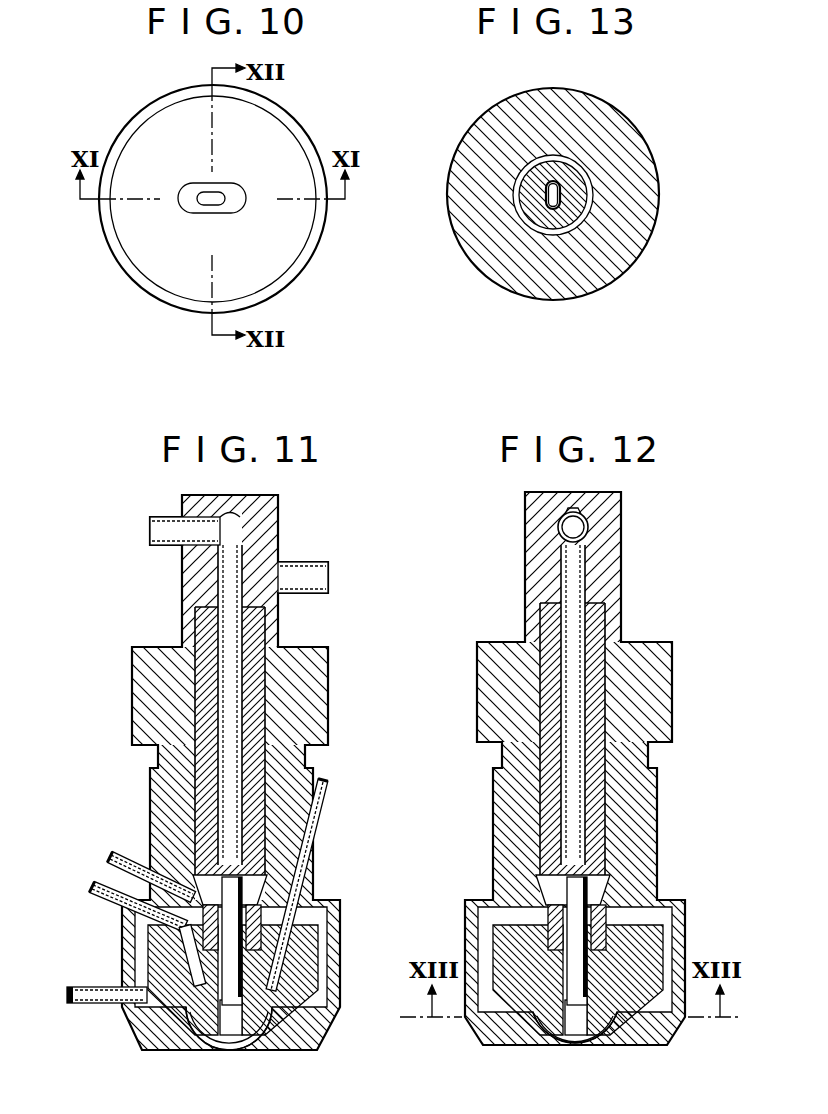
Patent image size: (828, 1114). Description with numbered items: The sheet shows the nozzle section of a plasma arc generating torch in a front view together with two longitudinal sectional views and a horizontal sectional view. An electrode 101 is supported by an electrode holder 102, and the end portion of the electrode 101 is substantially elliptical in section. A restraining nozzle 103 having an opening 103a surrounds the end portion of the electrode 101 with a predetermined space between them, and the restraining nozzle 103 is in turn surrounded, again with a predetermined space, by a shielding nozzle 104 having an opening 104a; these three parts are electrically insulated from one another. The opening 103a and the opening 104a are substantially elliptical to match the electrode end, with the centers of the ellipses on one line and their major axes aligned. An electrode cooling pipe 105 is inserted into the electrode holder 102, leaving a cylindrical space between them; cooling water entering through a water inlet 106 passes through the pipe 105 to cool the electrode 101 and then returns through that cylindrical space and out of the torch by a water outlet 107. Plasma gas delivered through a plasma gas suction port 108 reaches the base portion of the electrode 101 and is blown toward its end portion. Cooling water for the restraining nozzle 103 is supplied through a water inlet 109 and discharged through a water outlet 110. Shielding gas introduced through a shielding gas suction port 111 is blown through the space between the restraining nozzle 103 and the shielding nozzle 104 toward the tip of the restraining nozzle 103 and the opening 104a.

In FIG. 10, the electrode 101 is at (207, 206).
In FIG. 13, the electrode 101 is at (562, 208).
In FIG. 11, the electrode 101 is at (252, 1000).
In FIG. 12, the electrode 101 is at (600, 933).
In FIG. 11, the electrode holder 102 is at (247, 872).
In FIG. 12, the electrode holder 102 is at (590, 868).
In FIG. 10, the restraining nozzle 103 is at (230, 212).
In FIG. 13, the restraining nozzle 103 is at (572, 184).
In FIG. 11, the restraining nozzle 103 is at (257, 1030).
In FIG. 12, the restraining nozzle 103 is at (630, 1033).
In FIG. 11, the opening of the restraining nozzle 103a is at (227, 1023).
In FIG. 12, the opening of the restraining nozzle 103a is at (577, 1027).
In FIG. 10, the shielding nozzle 104 is at (300, 233).
In FIG. 13, the shielding nozzle 104 is at (617, 127).
In FIG. 11, the shielding nozzle 104 is at (333, 1007).
In FIG. 12, the shielding nozzle 104 is at (493, 1027).
In FIG. 11, the opening of the shielding nozzle 104a is at (212, 1054).
In FIG. 12, the opening of the shielding nozzle 104a is at (568, 1033).
In FIG. 11, the electrode cooling pipe 105 is at (242, 636).
In FIG. 12, the electrode cooling pipe 105 is at (588, 584).
In FIG. 11, the water inlet 106 is at (172, 547).
In FIG. 11, the water outlet 107 is at (300, 562).
In FIG. 11, the plasma gas suction port 108 is at (132, 850).
In FIG. 11, the water inlet 109 is at (113, 903).
In FIG. 11, the water outlet 110 is at (325, 818).
In FIG. 11, the shielding gas suction port 111 is at (80, 1005).